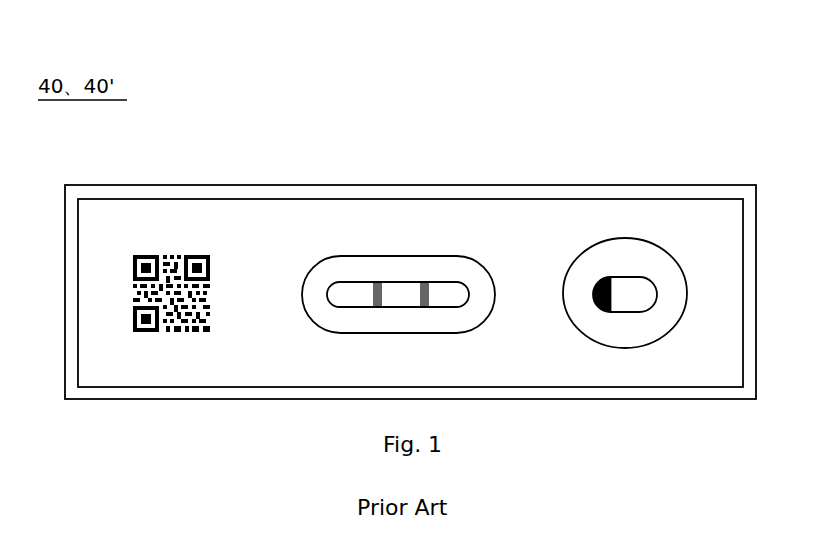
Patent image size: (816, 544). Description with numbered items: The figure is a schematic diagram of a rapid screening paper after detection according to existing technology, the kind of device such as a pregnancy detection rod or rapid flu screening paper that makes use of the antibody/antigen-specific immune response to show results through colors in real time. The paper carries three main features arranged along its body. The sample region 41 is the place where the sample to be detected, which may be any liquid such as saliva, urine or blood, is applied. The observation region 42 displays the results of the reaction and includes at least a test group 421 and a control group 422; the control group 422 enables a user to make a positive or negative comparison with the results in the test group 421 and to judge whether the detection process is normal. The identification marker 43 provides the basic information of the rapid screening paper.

The sample region 41 is at (626, 290).
The observation region 42 is at (343, 256).
The test group 421 is at (424, 283).
The control group 422 is at (375, 283).
The identification marker 43 is at (164, 255).